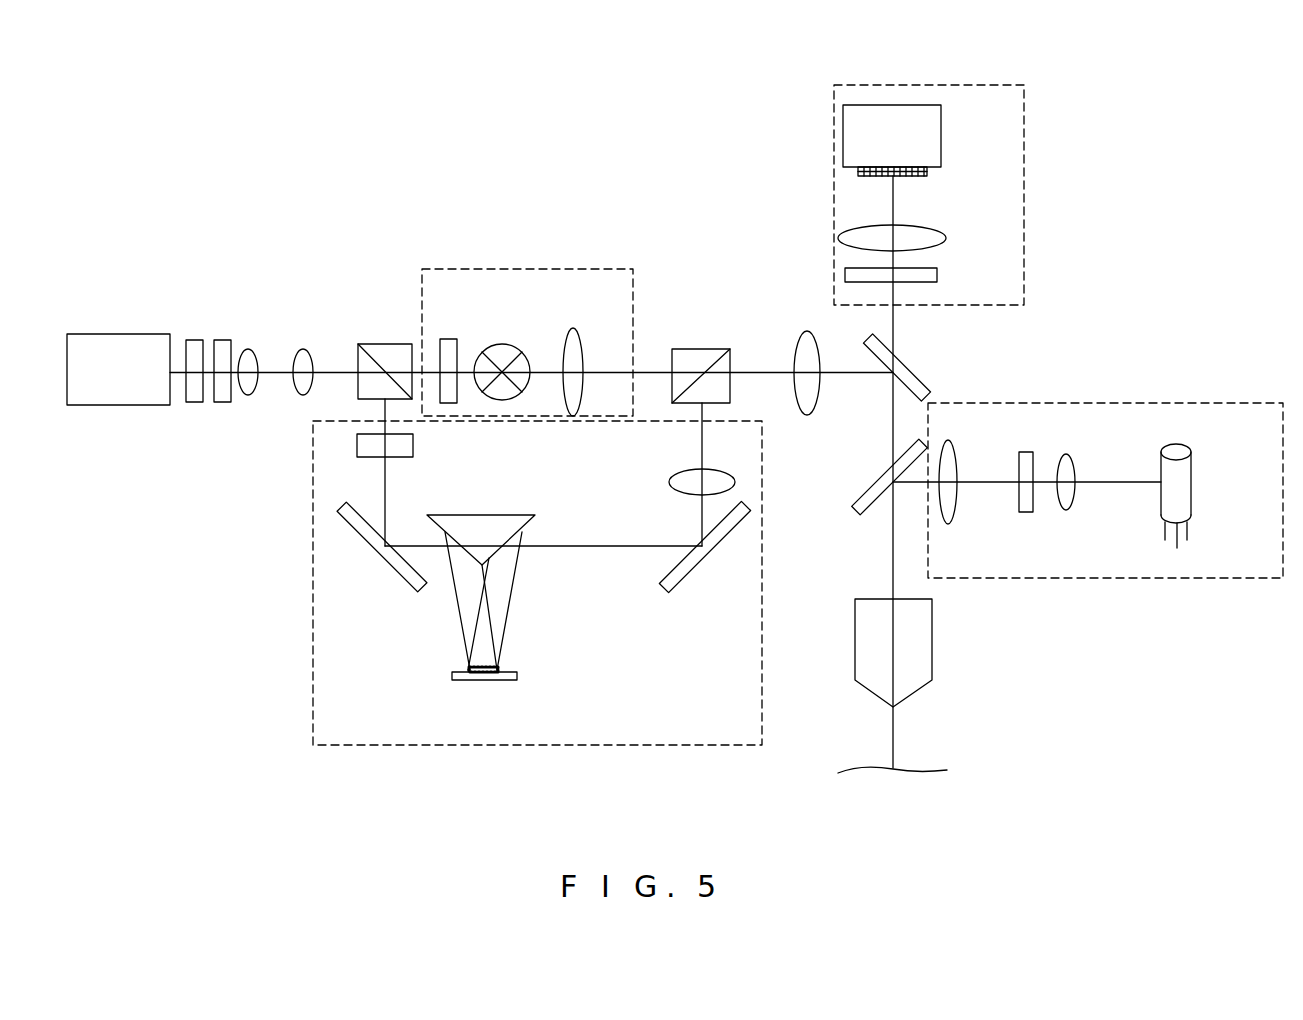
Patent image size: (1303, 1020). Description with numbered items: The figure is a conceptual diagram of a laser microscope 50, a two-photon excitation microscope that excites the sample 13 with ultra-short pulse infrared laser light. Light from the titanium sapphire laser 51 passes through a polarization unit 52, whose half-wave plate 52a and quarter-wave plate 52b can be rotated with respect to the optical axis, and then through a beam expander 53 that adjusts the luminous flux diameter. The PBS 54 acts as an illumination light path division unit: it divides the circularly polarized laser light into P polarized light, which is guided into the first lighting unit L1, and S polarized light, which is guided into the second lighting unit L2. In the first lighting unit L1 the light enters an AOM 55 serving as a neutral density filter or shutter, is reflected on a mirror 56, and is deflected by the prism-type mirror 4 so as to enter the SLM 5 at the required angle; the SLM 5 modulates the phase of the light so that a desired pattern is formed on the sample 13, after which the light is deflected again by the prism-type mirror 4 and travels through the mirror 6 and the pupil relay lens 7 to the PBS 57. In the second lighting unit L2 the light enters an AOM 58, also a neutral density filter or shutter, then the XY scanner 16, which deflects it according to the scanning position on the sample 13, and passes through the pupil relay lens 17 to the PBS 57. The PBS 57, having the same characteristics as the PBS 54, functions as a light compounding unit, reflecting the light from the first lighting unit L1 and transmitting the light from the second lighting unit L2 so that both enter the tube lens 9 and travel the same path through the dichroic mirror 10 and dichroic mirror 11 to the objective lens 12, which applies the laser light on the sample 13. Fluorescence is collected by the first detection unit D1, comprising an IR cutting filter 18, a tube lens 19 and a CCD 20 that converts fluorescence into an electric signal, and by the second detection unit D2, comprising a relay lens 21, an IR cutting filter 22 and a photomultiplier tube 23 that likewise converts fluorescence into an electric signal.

The prism-type mirror 4 is at (478, 527).
The phase-modulation type SLM 5 is at (483, 680).
The mirror 6 is at (677, 578).
The pupil relay lens 7 is at (717, 478).
The tube lens 9 is at (803, 343).
The dichroic mirror 10 is at (908, 380).
The dichroic mirror 11 is at (870, 492).
The objective lens 12 is at (872, 642).
The sample 13 is at (920, 770).
The XY scanner 16 is at (503, 345).
The pupil relay lens 17 is at (572, 347).
The IR cutting filter 18 is at (923, 280).
The tube lens 19 is at (930, 240).
The CCD 20 is at (927, 140).
The relay lens 21 is at (1090, 523).
The IR cutting filter 22 is at (1025, 463).
The photomultiplier tube 23 is at (1183, 485).
The laser microscope 50 is at (1172, 80).
The titanium sapphire laser 51 is at (118, 343).
The polarization unit 52 is at (220, 316).
The λ/2 plate 52a is at (192, 352).
The λ/4 plate 52b is at (240, 341).
The beam expander 53 is at (313, 405).
The PBS 54 is at (385, 352).
The AOM 55 is at (402, 448).
The mirror 56 is at (353, 525).
The PBS 57 is at (700, 357).
The AOM 58 is at (448, 343).
The first lighting unit L1 is at (532, 745).
The second lighting unit L2 is at (542, 268).
The first detection unit D1 is at (1025, 197).
The second detection unit D2 is at (1130, 578).